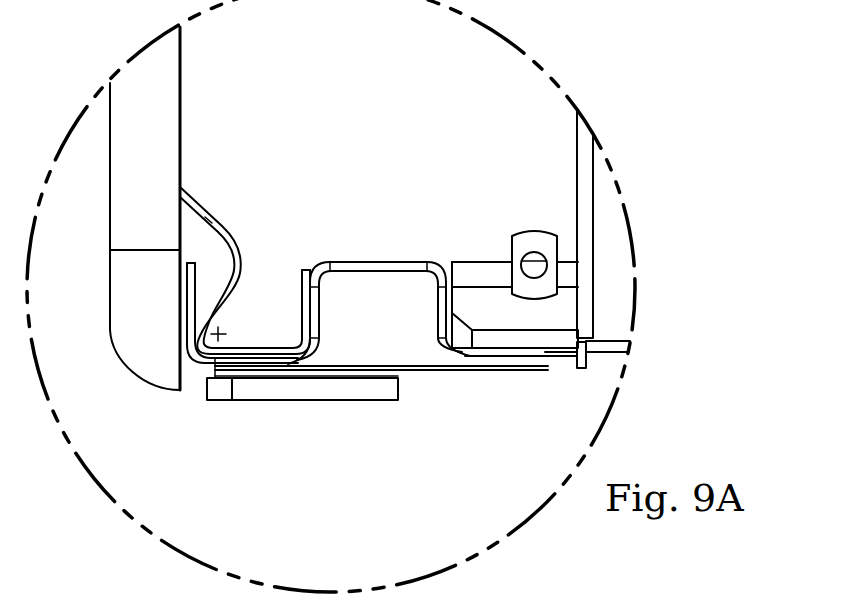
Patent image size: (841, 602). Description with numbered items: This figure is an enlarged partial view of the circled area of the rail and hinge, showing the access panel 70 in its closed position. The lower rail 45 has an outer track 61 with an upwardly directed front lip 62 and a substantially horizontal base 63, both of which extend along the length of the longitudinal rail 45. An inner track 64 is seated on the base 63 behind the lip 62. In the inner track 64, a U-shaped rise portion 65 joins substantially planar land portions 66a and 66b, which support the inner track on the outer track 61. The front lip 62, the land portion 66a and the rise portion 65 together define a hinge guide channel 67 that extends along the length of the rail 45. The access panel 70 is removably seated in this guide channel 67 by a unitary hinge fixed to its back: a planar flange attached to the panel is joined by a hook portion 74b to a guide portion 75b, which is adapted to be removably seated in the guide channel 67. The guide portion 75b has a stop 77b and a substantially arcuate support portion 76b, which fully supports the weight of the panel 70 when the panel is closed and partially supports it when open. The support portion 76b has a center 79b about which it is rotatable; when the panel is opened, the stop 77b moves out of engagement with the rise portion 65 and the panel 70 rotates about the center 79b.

The lower rail 45 is at (316, 192).
The outer track 61 is at (432, 384).
The front lip 62 is at (192, 312).
The base 63 is at (396, 367).
The inner track 64 is at (399, 248).
The rise portion 65 is at (369, 262).
The land portion 66a is at (262, 360).
The land portion 66b is at (517, 360).
The hinge guide channel 67 is at (298, 345).
The access panel 70 is at (136, 172).
The hook portion 74b is at (240, 253).
The guide portion 75b is at (277, 335).
The support portion 76b is at (208, 365).
The stop 77b is at (303, 282).
The center 79b is at (222, 338).